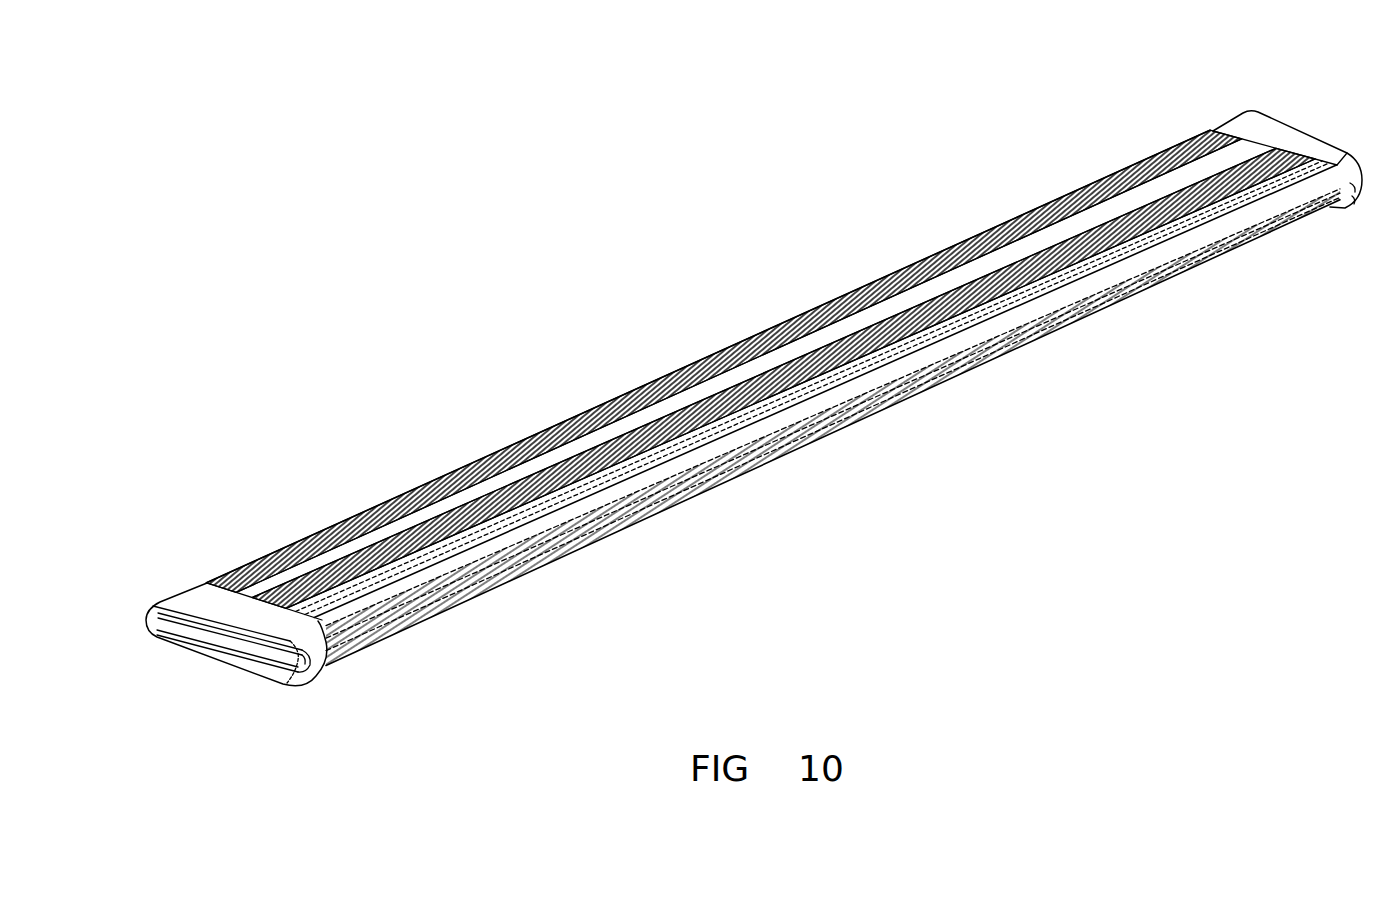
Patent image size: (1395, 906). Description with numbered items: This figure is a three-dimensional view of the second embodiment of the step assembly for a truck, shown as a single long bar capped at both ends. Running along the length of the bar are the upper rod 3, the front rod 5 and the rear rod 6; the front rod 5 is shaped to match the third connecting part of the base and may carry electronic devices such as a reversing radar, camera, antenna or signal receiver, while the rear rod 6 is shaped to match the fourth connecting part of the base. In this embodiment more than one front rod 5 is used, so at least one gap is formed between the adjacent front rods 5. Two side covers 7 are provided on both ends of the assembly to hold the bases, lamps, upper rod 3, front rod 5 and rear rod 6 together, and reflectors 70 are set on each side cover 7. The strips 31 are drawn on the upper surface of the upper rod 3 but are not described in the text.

The upper rod 3 is at (735, 378).
The anti-slip strips 31 is at (535, 437).
The front rod 5 is at (903, 400).
The rear rod 6 is at (893, 272).
The side cover 7 is at (192, 583).
The reflector 70 is at (227, 650).